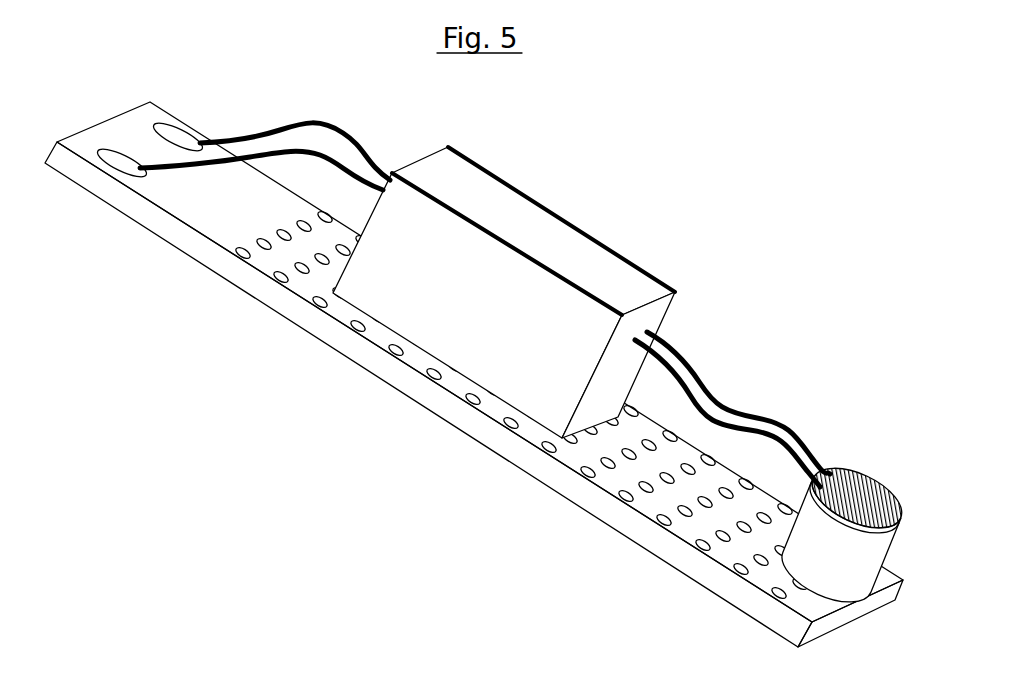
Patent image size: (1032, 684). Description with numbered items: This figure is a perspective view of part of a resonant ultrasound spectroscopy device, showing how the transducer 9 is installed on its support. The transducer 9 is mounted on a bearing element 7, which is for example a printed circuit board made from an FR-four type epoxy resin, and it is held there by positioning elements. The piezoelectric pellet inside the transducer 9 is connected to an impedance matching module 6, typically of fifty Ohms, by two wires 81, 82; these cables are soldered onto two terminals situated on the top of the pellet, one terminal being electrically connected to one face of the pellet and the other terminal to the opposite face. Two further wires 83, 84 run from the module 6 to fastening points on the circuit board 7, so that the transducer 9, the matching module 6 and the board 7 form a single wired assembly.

The impedance matching module 6 is at (562, 228).
The bearing element 7 is at (512, 458).
The transducer 9 is at (876, 456).
The wire 81 is at (690, 353).
The wire 82 is at (753, 428).
The wire 83 is at (298, 123).
The wire 84 is at (193, 167).